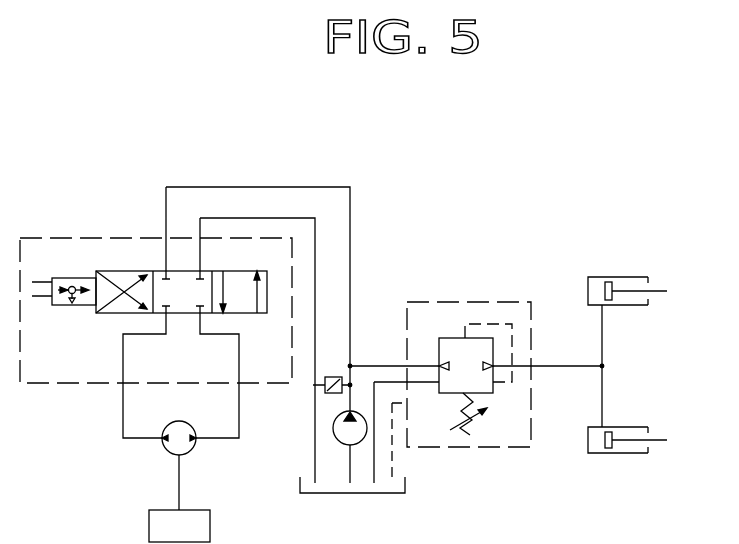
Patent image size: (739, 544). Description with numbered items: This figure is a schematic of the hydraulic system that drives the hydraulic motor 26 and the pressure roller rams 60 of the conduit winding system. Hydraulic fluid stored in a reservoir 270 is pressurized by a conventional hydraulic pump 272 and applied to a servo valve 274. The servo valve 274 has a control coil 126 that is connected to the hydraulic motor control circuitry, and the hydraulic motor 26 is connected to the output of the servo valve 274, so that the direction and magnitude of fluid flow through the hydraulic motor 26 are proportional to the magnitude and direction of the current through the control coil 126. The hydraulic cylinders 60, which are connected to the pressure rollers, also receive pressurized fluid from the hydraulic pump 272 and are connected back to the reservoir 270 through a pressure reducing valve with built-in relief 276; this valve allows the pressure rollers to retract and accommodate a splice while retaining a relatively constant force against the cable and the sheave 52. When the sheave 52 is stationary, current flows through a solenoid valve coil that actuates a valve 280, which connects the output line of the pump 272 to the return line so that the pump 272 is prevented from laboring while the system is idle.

The servo valve 274 is at (118, 268).
The control coil 126 is at (59, 305).
The hydraulic motor 26 is at (168, 454).
The sheave 52 is at (149, 524).
The valve 280 is at (335, 362).
The hydraulic pump 272 is at (333, 430).
The reservoir 270 is at (405, 490).
The pressure reducing valve with built-in relief 276 is at (493, 447).
The pressure roller rams 60 is at (627, 276).